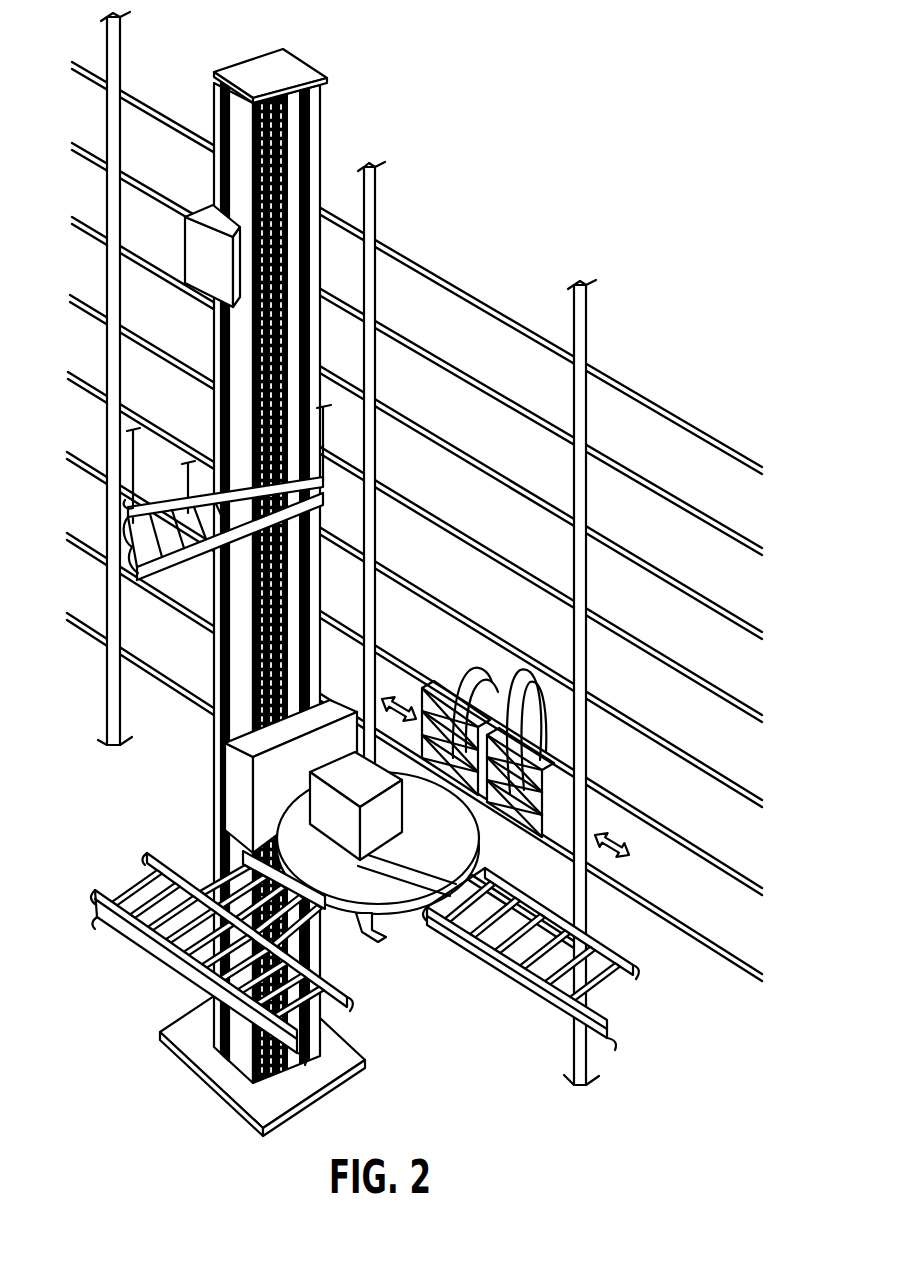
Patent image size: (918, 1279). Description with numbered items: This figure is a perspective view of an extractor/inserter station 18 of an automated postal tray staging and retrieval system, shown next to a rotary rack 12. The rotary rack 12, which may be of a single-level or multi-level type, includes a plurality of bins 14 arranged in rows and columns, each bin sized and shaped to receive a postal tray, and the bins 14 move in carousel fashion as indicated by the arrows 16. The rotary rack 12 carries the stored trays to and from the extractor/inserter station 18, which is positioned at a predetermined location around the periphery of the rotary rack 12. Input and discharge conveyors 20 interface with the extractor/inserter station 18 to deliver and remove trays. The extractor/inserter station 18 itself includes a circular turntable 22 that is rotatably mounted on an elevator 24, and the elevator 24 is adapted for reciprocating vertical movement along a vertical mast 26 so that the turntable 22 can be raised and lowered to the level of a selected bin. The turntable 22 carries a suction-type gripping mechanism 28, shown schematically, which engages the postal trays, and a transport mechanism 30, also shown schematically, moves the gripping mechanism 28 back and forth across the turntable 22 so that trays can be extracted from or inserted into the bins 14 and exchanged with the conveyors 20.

The rotary rack 12 is at (716, 410).
The bins 14 is at (466, 673).
The arrows 16 is at (408, 696).
The extractor/inserter station 18 is at (184, 826).
The input and discharge conveyors 20 is at (128, 930).
The circular turntable 22 is at (418, 915).
The elevator 24 is at (266, 798).
The mast 26 is at (318, 131).
The suction-type gripping mechanism 28 is at (348, 838).
The transport mechanism 30 is at (417, 860).